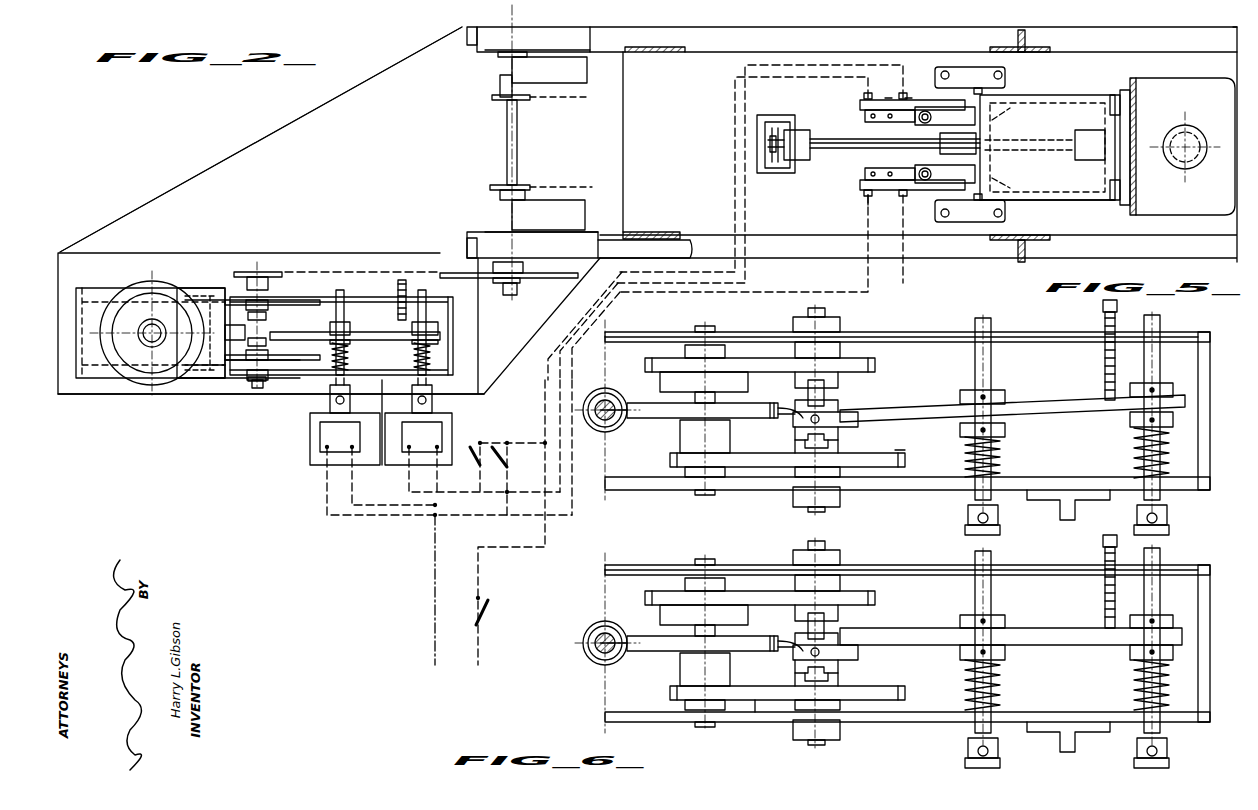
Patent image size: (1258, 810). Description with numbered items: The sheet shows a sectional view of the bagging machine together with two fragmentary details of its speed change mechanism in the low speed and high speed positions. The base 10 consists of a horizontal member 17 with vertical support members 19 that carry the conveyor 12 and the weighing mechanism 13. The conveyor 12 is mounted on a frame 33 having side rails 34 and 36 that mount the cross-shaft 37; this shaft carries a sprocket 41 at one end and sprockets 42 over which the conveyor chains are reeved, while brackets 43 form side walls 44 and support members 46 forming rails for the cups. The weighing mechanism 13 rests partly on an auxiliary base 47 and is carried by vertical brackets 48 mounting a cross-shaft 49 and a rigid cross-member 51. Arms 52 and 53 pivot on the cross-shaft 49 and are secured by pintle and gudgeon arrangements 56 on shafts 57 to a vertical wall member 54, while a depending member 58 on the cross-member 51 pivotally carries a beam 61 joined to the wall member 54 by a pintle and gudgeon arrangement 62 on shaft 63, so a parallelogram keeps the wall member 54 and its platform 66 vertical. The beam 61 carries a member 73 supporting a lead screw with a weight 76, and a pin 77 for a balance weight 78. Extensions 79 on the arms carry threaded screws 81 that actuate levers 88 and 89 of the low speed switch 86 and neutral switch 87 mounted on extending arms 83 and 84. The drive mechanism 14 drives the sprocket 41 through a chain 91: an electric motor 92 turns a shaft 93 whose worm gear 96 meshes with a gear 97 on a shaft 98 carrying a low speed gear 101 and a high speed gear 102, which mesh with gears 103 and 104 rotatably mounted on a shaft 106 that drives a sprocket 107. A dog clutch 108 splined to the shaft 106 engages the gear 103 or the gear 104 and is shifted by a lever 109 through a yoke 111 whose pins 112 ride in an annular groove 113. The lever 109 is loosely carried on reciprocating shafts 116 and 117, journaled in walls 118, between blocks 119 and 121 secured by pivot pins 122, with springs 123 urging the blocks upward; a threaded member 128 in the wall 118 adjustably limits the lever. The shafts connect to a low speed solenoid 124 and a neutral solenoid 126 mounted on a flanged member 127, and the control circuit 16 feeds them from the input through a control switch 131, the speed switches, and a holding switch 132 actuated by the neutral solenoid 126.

In FIG. 2, the base 10 is at (285, 125).
In FIG. 2, the conveyor 12 is at (534, 152).
In FIG. 2, the weighing mechanism 13 is at (1107, 145).
In FIG. 2, the drive mechanism 14 is at (286, 391).
In FIG. 5, the drive mechanism 14 is at (911, 335).
In FIG. 6, the drive mechanism 14 is at (911, 568).
In FIG. 2, the control circuit 16 is at (423, 528).
In FIG. 2, the horizontal member 17 is at (226, 170).
In FIG. 2, the vertical support members 19 is at (668, 46).
In FIG. 2, the frame 33 is at (614, 28).
In FIG. 2, the side rail 34 is at (666, 248).
In FIG. 2, the side rail 36 is at (624, 38).
In FIG. 2, the cross-shaft 37 is at (507, 128).
In FIG. 2, the sprocket 41 is at (533, 278).
In FIG. 2, the sprockets 42 is at (492, 97).
In FIG. 2, the brackets 43 is at (570, 30).
In FIG. 2, the side walls 44 is at (533, 50).
In FIG. 2, the members 46 is at (587, 73).
In FIG. 2, the auxiliary base 47 is at (712, 58).
In FIG. 2, the vertical brackets 48 is at (955, 67).
In FIG. 2, the cross-shaft 49 is at (978, 88).
In FIG. 2, the rigid cross-member 51 is at (990, 128).
In FIG. 2, the arm 52 is at (1030, 195).
In FIG. 2, the arm 53 is at (1025, 103).
In FIG. 2, the vertical wall member 54 is at (1137, 80).
In FIG. 2, the pintle and gudgeon arrangements 56 is at (1124, 90).
In FIG. 2, the shafts 57 is at (1112, 97).
In FIG. 2, the depending member 58 is at (1070, 150).
In FIG. 2, the beam 61 is at (820, 160).
In FIG. 2, the pintle and gudgeon arrangement 62 is at (1140, 150).
In FIG. 2, the shaft 63 is at (1140, 136).
In FIG. 2, the platform 66 is at (1178, 208).
In FIG. 2, the member 73 is at (802, 130).
In FIG. 2, the weight 76 is at (925, 205).
In FIG. 2, the pin 77 is at (768, 146).
In FIG. 2, the balance weight 78 is at (757, 130).
In FIG. 2, the extensions 79 is at (925, 110).
In FIG. 2, the threaded screws 81 is at (922, 183).
In FIG. 2, the extending arm 83 is at (860, 186).
In FIG. 2, the extending arm 84 is at (860, 104).
In FIG. 2, the low speed switch 86 is at (865, 173).
In FIG. 2, the neutral switch 87 is at (865, 116).
In FIG. 2, the actuating lever 88 is at (895, 195).
In FIG. 2, the actuating lever 89 is at (898, 96).
In FIG. 2, the chain 91 is at (358, 300).
In FIG. 2, the electric motor 92 is at (140, 285).
In FIG. 5, the shaft 93 is at (606, 400).
In FIG. 6, the shaft 93 is at (606, 633).
In FIG. 5, the worm gear 96 is at (593, 430).
In FIG. 6, the worm gear 96 is at (592, 660).
In FIG. 2, the gear 97 is at (160, 340).
In FIG. 5, the gear 97 is at (646, 419).
In FIG. 6, the gear 97 is at (645, 652).
In FIG. 2, the shaft 98 is at (205, 290).
In FIG. 5, the shaft 98 is at (707, 327).
In FIG. 6, the shaft 98 is at (700, 560).
In FIG. 2, the low speed gear 101 is at (192, 385).
In FIG. 5, the low speed gear 101 is at (670, 460).
In FIG. 6, the low speed gear 101 is at (670, 693).
In FIG. 2, the high speed gear 102 is at (182, 290).
In FIG. 5, the high speed gear 102 is at (742, 358).
In FIG. 6, the high speed gear 102 is at (742, 591).
In FIG. 2, the low speed gear 103 is at (230, 380).
In FIG. 5, the low speed gear 103 is at (905, 460).
In FIG. 6, the low speed gear 103 is at (762, 715).
In FIG. 2, the high speed gear 104 is at (260, 270).
In FIG. 5, the high speed gear 104 is at (838, 356).
In FIG. 6, the high speed gear 104 is at (840, 590).
In FIG. 2, the shaft 106 is at (256, 388).
In FIG. 5, the shaft 106 is at (827, 312).
In FIG. 6, the shaft 106 is at (828, 546).
In FIG. 2, the sprocket 107 is at (244, 272).
In FIG. 2, the dog clutch 108 is at (278, 325).
In FIG. 5, the dog clutch 108 is at (840, 400).
In FIG. 6, the dog clutch 108 is at (840, 622).
In FIG. 2, the lever 109 is at (285, 340).
In FIG. 5, the lever 109 is at (1050, 402).
In FIG. 6, the lever 109 is at (925, 633).
In FIG. 5, the yoke 111 is at (845, 425).
In FIG. 6, the yoke 111 is at (845, 650).
In FIG. 5, the pins 112 is at (812, 419).
In FIG. 6, the pins 112 is at (812, 652).
In FIG. 5, the annular groove 113 is at (790, 412).
In FIG. 6, the annular groove 113 is at (790, 645).
In FIG. 2, the reciprocating shaft 116 is at (340, 290).
In FIG. 5, the reciprocating shaft 116 is at (991, 326).
In FIG. 6, the reciprocating shaft 116 is at (991, 557).
In FIG. 2, the reciprocating shaft 117 is at (425, 290).
In FIG. 5, the reciprocating shaft 117 is at (1160, 324).
In FIG. 6, the reciprocating shaft 117 is at (1160, 557).
In FIG. 2, the walls 118 is at (300, 300).
In FIG. 5, the walls 118 is at (956, 334).
In FIG. 6, the walls 118 is at (954, 567).
In FIG. 2, the block 119 is at (350, 325).
In FIG. 5, the block 119 is at (960, 396).
In FIG. 6, the block 119 is at (1005, 620).
In FIG. 2, the block 121 is at (350, 350).
In FIG. 5, the block 121 is at (960, 430).
In FIG. 6, the block 121 is at (1005, 655).
In FIG. 5, the pivot pins 122 is at (980, 396).
In FIG. 6, the pivot pins 122 is at (985, 620).
In FIG. 2, the springs 123 is at (413, 357).
In FIG. 5, the springs 123 is at (1000, 456).
In FIG. 6, the springs 123 is at (1000, 682).
In FIG. 2, the low speed solenoid 124 is at (310, 425).
In FIG. 2, the neutral solenoid 126 is at (452, 418).
In FIG. 2, the flanged member 127 is at (383, 466).
In FIG. 5, the flanged member 127 is at (1040, 495).
In FIG. 6, the flanged member 127 is at (1066, 737).
In FIG. 2, the threaded member 128 is at (402, 280).
In FIG. 5, the threaded member 128 is at (1103, 322).
In FIG. 6, the threaded member 128 is at (1103, 555).
In FIG. 2, the control switch 131 is at (481, 597).
In FIG. 2, the holding switch 132 is at (476, 440).